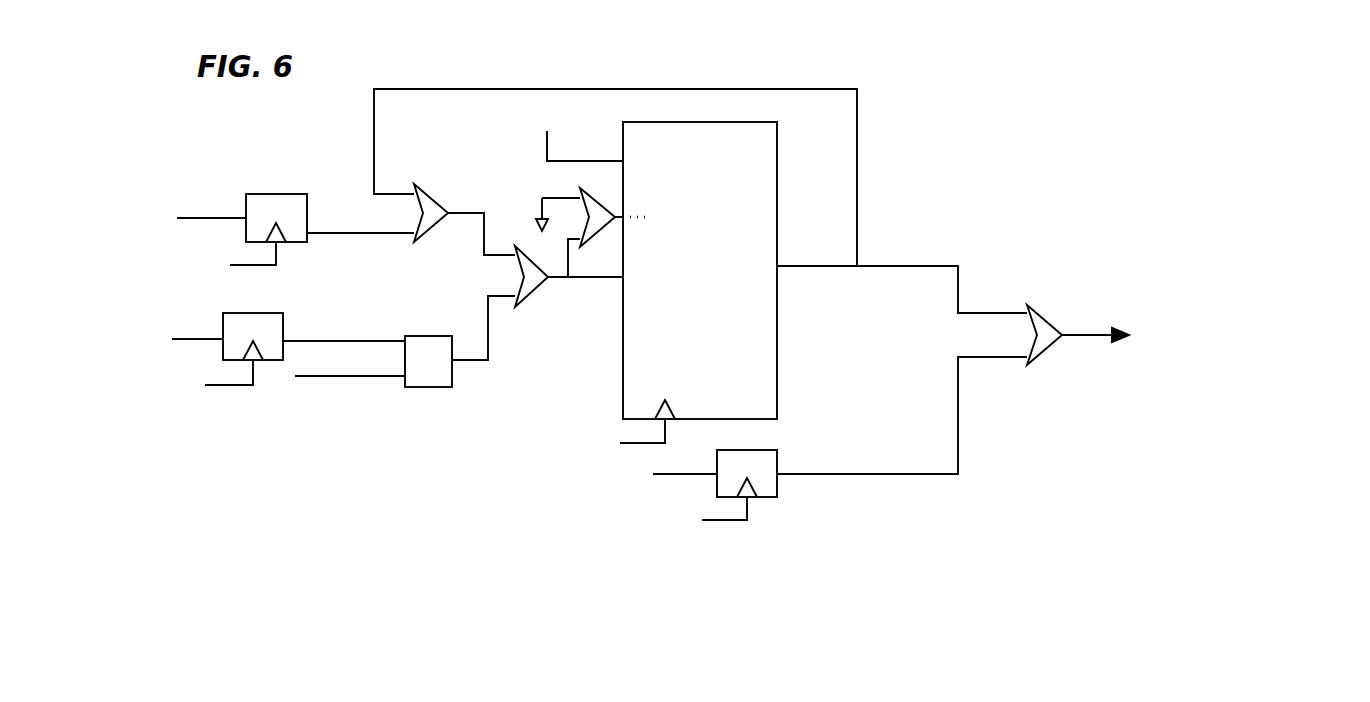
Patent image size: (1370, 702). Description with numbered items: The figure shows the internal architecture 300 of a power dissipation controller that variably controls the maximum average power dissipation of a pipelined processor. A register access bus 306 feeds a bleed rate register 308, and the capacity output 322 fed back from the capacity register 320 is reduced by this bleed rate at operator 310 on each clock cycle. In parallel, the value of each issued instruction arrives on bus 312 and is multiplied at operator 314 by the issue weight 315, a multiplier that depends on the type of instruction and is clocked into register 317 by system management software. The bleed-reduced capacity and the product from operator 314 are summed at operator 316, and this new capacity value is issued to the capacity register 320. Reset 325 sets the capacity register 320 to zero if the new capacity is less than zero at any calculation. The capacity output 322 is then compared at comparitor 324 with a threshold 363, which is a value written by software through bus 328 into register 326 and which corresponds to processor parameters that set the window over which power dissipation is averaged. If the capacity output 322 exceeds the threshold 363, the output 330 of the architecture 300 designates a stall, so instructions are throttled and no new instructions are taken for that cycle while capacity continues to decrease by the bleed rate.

The internal architecture 300 is at (966, 153).
The register access bus 306 is at (196, 218).
The bleed rate register 308 is at (293, 194).
The operator 310 is at (445, 186).
The bus 312 is at (307, 377).
The operator 314 is at (452, 372).
The issue weight 315 is at (357, 342).
The operator 316 is at (537, 290).
The register 317 is at (232, 313).
The capacity register 320 is at (777, 387).
The capacity output 322 is at (835, 268).
The comparitor 324 is at (1040, 359).
The reset 325 is at (579, 192).
The register 326 is at (770, 497).
The bus 328 is at (655, 477).
The output 330 is at (1091, 333).
The threshold 363 is at (912, 473).